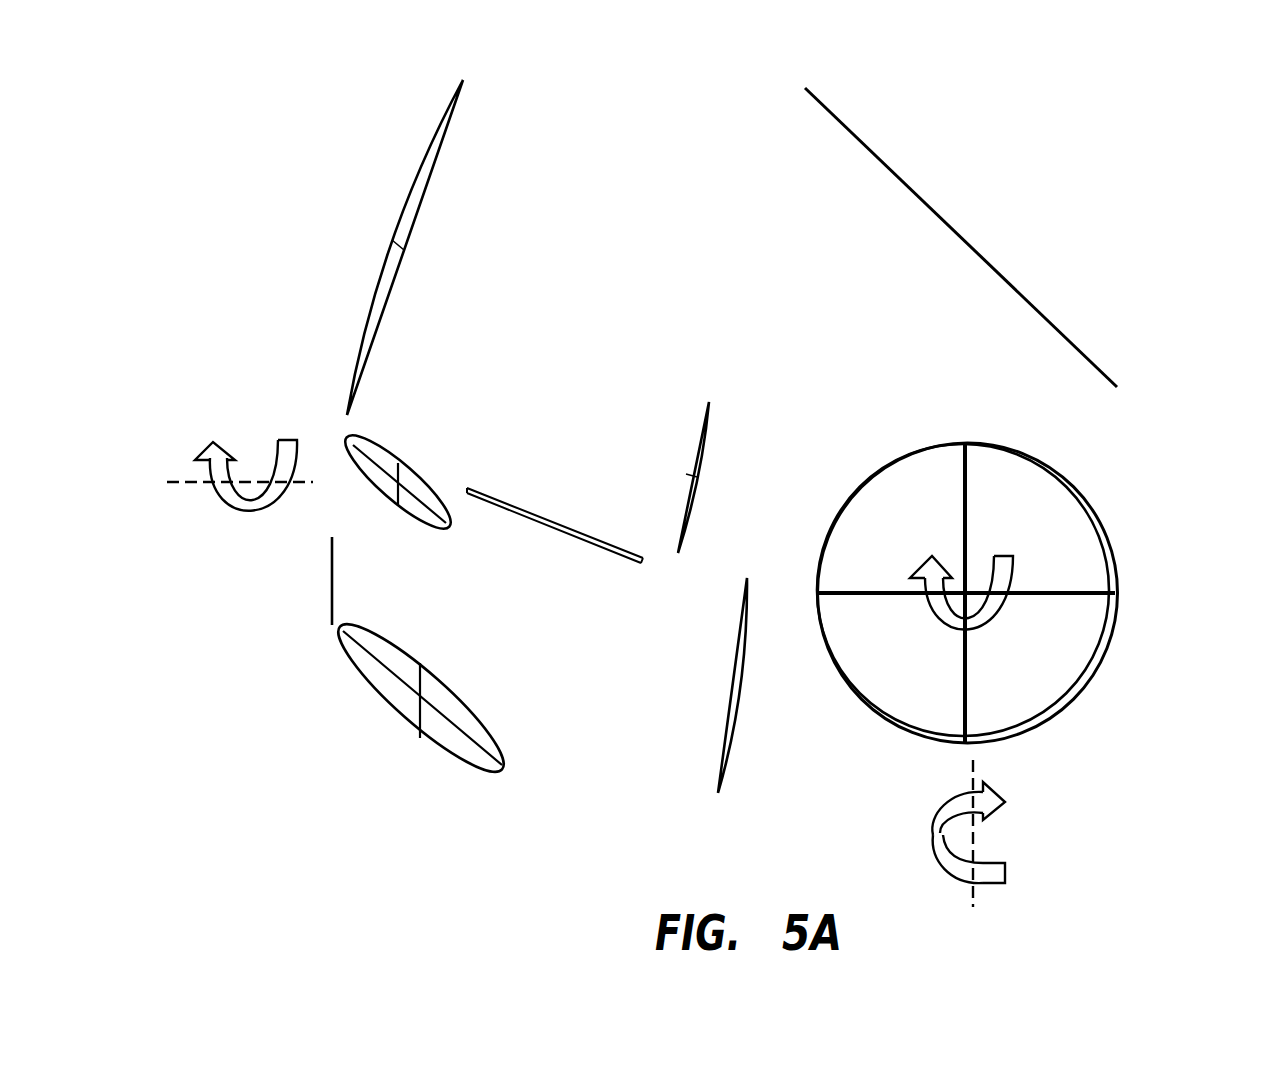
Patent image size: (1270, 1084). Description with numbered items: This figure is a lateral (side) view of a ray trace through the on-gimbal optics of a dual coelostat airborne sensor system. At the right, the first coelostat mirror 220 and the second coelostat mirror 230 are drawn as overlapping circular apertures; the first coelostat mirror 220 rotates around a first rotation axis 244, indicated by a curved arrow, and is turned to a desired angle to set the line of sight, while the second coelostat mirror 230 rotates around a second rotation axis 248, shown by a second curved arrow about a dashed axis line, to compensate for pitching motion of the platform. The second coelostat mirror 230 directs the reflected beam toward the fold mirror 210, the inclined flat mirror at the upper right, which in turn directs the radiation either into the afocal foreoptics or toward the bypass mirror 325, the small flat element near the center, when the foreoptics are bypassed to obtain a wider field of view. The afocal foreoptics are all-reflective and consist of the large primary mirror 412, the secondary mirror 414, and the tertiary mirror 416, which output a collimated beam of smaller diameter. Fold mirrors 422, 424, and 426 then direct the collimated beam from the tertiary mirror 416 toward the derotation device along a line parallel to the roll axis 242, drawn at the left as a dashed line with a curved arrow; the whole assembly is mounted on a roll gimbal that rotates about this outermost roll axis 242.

The fold mirror 210 is at (890, 168).
The first coelostat mirror 220 is at (1118, 628).
The second coelostat mirror 230 is at (930, 732).
The roll axis 242 is at (172, 485).
The first rotation axis 244 is at (1003, 556).
The second rotation axis 248 is at (977, 843).
The bypass mirror 325 is at (633, 556).
The primary mirror 412 is at (402, 213).
The secondary mirror 414 is at (700, 440).
The tertiary mirror 416 is at (722, 778).
The fold mirror 422 is at (332, 597).
The fold mirror 424 is at (460, 765).
The fold mirror 426 is at (347, 440).